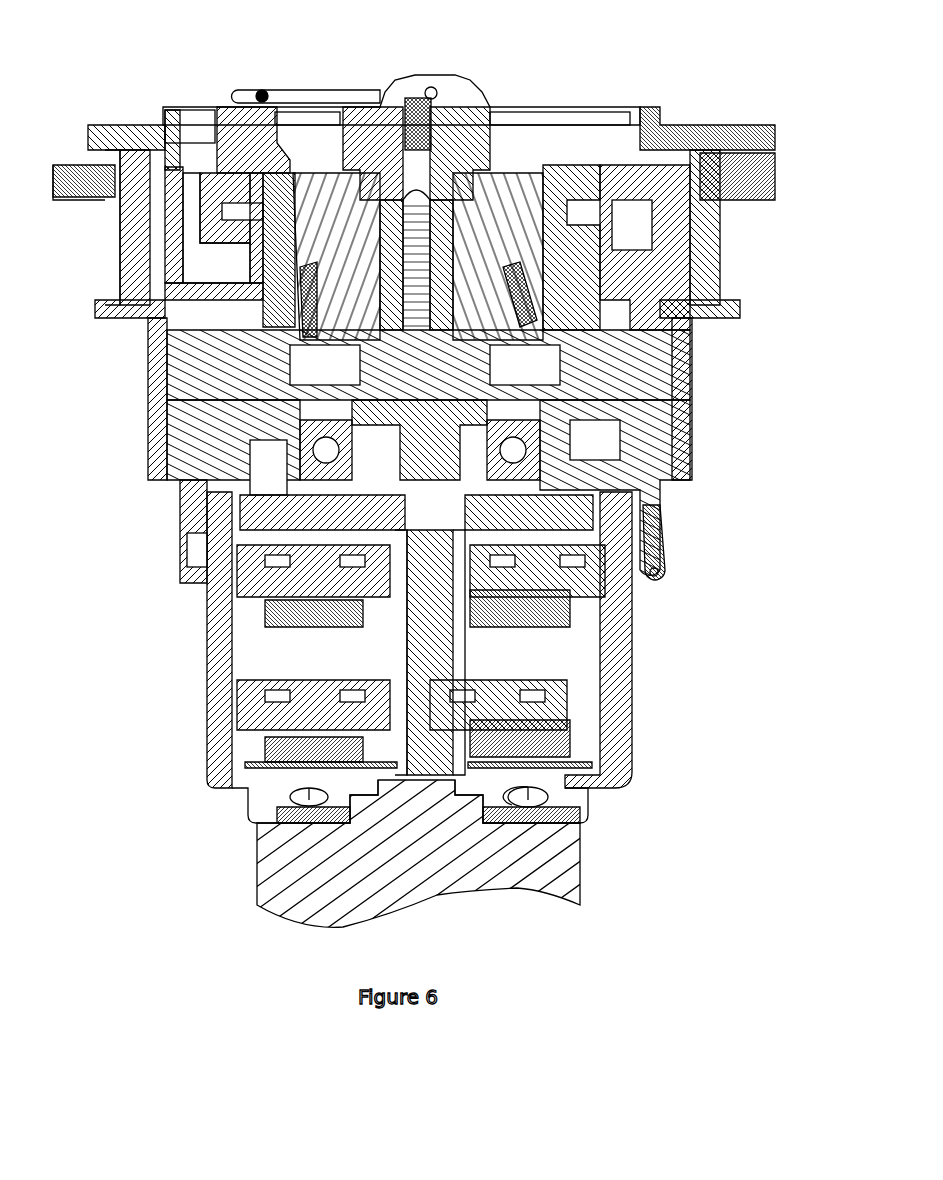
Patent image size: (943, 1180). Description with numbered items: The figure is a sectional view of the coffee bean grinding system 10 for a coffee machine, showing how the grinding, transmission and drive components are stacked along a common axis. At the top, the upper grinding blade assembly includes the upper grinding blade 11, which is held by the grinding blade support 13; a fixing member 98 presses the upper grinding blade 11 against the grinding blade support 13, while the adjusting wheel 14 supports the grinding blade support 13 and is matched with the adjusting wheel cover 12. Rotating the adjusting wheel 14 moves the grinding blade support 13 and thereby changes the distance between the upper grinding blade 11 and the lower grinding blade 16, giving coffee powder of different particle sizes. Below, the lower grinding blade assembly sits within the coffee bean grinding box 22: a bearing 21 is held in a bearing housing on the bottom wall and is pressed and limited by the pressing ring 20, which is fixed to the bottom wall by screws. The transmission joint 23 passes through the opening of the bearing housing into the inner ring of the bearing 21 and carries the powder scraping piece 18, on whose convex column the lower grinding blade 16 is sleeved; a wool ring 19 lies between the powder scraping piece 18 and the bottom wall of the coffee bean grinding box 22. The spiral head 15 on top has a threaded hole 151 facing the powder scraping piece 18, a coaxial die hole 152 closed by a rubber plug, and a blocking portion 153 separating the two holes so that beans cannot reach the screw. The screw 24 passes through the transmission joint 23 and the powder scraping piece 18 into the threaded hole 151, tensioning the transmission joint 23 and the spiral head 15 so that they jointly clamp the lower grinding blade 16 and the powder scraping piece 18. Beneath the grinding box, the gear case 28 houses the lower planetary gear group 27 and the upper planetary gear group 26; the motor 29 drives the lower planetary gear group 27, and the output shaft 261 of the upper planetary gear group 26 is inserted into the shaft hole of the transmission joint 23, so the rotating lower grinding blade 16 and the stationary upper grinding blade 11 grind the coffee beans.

The coffee bean grinding system 10 is at (180, 44).
The upper grinding blade 11 is at (235, 316).
The adjusting wheel cover 12 is at (700, 130).
The grinding blade support 13 is at (190, 170).
The adjusting wheel 14 is at (738, 183).
The spiral head 15 is at (375, 95).
The threaded hole 151 is at (362, 160).
The die hole 152 is at (478, 143).
The blocking portion 153 is at (537, 157).
The fixing member 98 is at (592, 105).
The lower grinding blade 16 is at (533, 327).
The powder scraping piece 18 is at (233, 365).
The wool ring 19 is at (240, 440).
The pressing ring 20 is at (640, 455).
The bearing 21 is at (240, 447).
The coffee bean grinding box 22 is at (672, 418).
The transmission joint 23 is at (673, 497).
The screw 24 is at (620, 250).
The upper planetary gear group 26 is at (532, 564).
The output shaft 261 is at (240, 527).
The lower planetary gear group 27 is at (530, 687).
The gear case 28 is at (205, 690).
The motor 29 is at (293, 870).